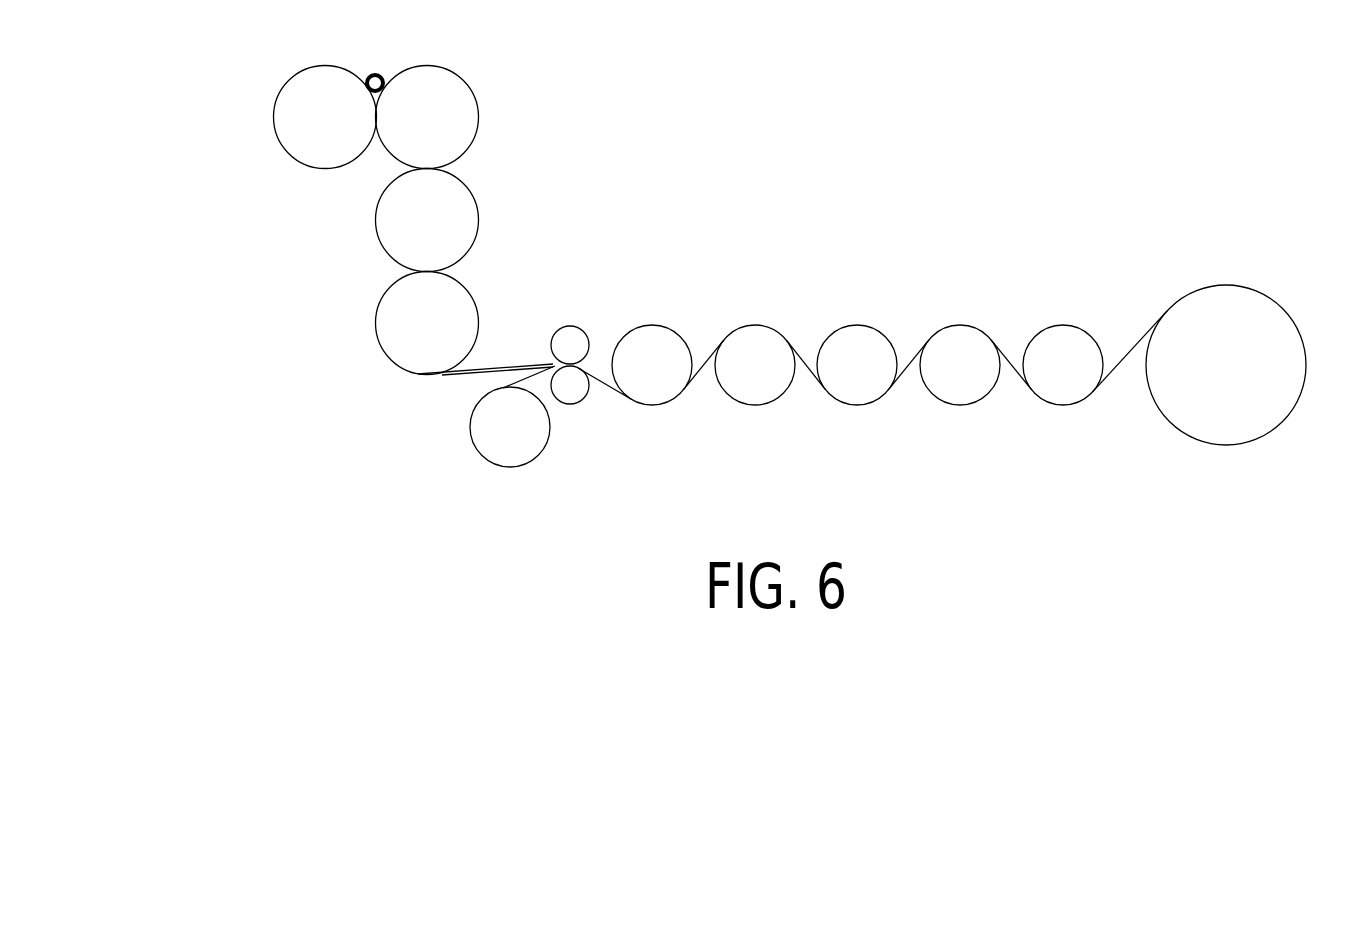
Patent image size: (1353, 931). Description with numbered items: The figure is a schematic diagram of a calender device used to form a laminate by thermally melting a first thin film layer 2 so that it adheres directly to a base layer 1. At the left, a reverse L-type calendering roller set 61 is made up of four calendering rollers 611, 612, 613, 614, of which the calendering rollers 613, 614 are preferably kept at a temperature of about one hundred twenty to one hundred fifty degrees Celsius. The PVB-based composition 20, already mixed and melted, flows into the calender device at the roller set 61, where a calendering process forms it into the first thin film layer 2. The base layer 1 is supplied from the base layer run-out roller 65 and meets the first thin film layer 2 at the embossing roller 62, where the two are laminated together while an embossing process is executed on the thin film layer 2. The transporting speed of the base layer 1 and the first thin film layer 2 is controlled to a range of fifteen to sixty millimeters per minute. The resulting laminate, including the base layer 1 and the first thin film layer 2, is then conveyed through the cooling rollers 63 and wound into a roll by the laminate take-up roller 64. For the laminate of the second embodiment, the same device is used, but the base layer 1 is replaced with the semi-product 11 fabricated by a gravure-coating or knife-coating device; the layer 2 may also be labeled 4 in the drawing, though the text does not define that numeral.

The base layer 1 is at (792, 390).
The semi-product 11 is at (530, 377).
The first thin film layer 2 is at (470, 426).
The adhesive film 4 is at (452, 375).
The PVB-based composition 20 is at (374, 73).
The reverse L-type calendering roller set 61 is at (345, 219).
The calendering roller 611 is at (280, 126).
The calendering roller 612 is at (390, 154).
The calendering roller 613 is at (380, 232).
The calendering roller 614 is at (380, 333).
The embossing roller 62 is at (570, 330).
The cooling rollers 63 is at (1087, 303).
The laminate take-up roller 64 is at (1233, 296).
The base layer run-out roller 65 is at (507, 458).